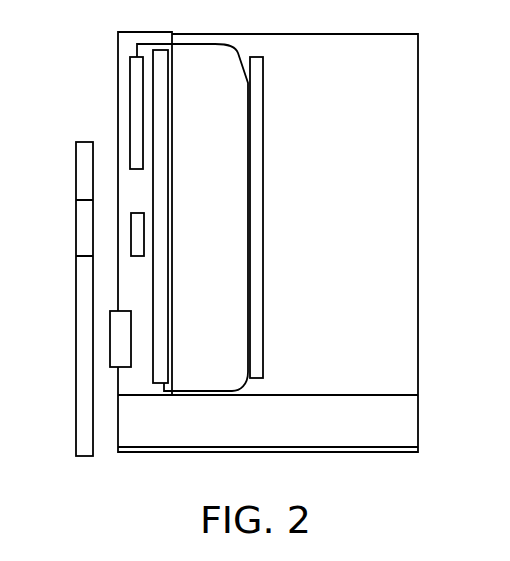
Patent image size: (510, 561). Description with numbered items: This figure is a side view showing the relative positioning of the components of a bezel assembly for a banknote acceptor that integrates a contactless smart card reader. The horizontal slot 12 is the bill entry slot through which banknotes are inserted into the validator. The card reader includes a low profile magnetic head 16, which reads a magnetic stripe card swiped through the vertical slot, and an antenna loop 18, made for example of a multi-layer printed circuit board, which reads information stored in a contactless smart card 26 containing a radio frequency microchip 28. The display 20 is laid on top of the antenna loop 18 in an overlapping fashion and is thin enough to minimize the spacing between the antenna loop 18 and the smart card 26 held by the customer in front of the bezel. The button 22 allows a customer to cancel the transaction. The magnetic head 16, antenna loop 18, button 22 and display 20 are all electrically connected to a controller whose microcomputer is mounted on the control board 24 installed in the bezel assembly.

The horizontal slot 12 is at (132, 431).
The magnetic head 16 is at (137, 233).
The antenna loop 18 is at (158, 152).
The display 20 is at (135, 95).
The button 22 is at (120, 339).
The control board 24 is at (257, 207).
The contactless smart card 26 is at (85, 355).
The radio frequency microchip 28 is at (85, 230).